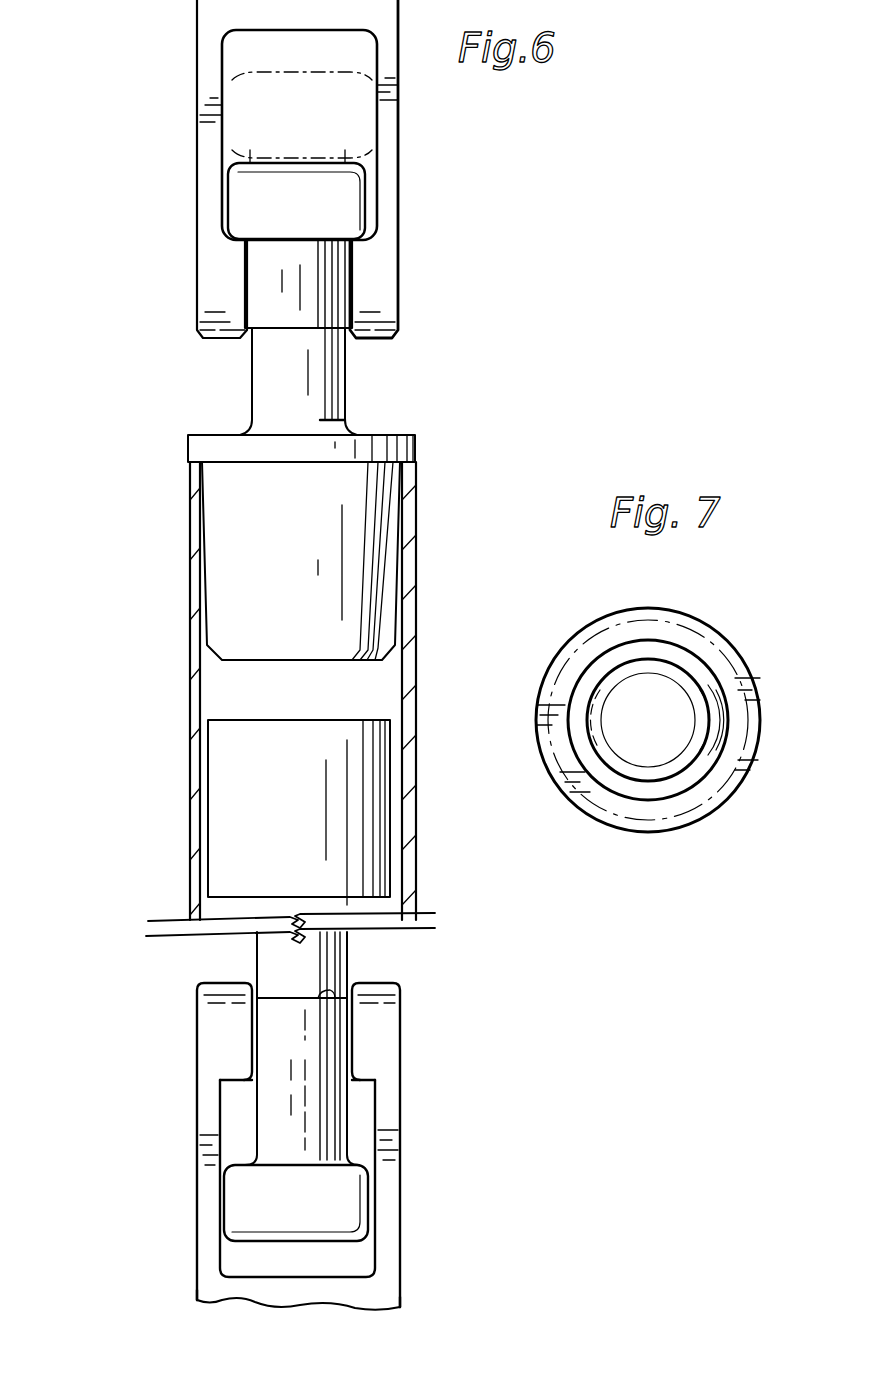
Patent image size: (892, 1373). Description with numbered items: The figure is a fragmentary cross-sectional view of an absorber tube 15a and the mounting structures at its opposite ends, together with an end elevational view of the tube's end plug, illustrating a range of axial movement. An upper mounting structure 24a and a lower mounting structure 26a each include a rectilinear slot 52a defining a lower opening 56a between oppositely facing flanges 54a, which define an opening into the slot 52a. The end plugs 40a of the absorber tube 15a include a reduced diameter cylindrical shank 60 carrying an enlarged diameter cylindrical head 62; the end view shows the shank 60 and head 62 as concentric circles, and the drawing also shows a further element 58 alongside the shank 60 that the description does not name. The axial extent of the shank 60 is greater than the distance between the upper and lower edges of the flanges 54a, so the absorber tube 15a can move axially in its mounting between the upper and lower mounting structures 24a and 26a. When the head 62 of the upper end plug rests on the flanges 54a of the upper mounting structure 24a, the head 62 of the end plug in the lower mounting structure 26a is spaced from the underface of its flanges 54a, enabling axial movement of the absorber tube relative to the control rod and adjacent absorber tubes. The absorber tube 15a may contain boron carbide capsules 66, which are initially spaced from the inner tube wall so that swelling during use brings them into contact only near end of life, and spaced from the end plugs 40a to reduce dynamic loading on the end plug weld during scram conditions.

In FIG. 6, the upper mounting structure 24a is at (143, 238).
In FIG. 6, the lower mounting structure 26a is at (113, 1146).
In FIG. 6, the rectilinear slot 52a is at (226, 40).
In FIG. 6, the enlarged diameter cylindrical head 62 is at (360, 202).
In FIG. 7, the enlarged diameter cylindrical head 62 is at (662, 800).
In FIG. 6, the lower opening 56a is at (248, 280).
In FIG. 6, the flanges 54a is at (380, 257).
In FIG. 6, the reduced diameter cylindrical shank 60 is at (265, 383).
In FIG. 7, the reduced diameter cylindrical shank 60 is at (618, 682).
In FIG. 6, the rod 58 is at (322, 340).
In FIG. 6, the absorber tube 15a is at (190, 615).
In FIG. 6, the end plug 40a is at (217, 512).
In FIG. 6, the B4C capsule 66 is at (225, 852).